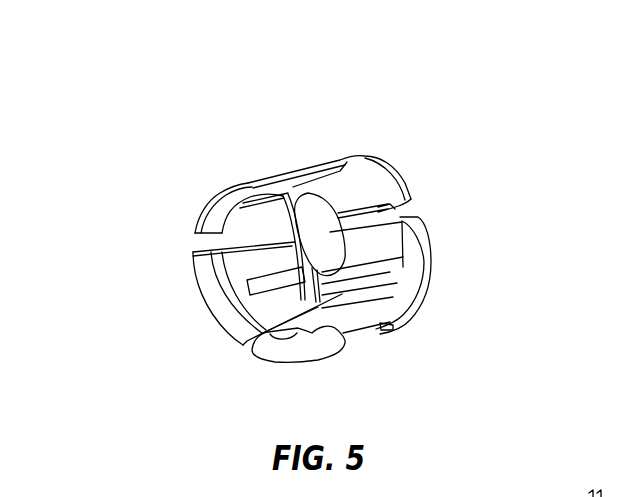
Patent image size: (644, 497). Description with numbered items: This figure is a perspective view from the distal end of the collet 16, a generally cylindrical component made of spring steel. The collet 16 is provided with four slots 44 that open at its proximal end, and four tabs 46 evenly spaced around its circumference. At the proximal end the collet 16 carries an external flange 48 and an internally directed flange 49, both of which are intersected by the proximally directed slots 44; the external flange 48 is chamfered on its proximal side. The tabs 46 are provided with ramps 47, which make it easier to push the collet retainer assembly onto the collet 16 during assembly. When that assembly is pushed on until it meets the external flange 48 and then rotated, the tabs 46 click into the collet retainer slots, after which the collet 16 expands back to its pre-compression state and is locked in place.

The collet 16 is at (302, 167).
The slots 44 is at (377, 222).
The tabs 46 is at (350, 229).
The ramps 47 is at (318, 347).
The external flange 48 is at (387, 178).
The internally directed flange 49 is at (387, 210).